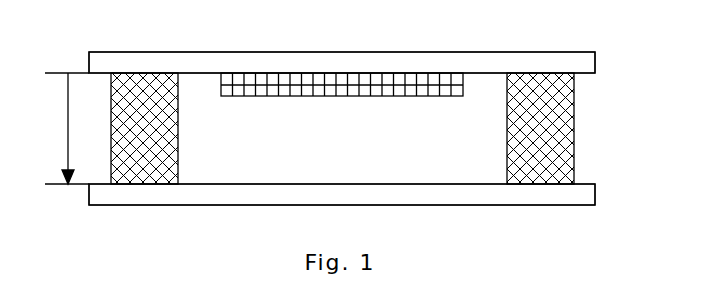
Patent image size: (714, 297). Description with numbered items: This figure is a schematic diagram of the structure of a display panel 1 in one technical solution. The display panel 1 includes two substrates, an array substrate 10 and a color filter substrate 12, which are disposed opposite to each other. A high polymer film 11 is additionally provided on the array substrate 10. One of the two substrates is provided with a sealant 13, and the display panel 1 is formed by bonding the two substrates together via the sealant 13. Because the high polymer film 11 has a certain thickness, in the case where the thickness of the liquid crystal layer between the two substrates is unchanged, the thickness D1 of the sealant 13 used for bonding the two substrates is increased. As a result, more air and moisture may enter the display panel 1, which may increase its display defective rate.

The display panel 1 is at (66, 38).
The array substrate 10 is at (576, 62).
The high polymer film 11 is at (428, 86).
The color filter substrate 12 is at (576, 193).
The sealant 13 is at (550, 118).
The thickness of the sealant D1 is at (61, 128).